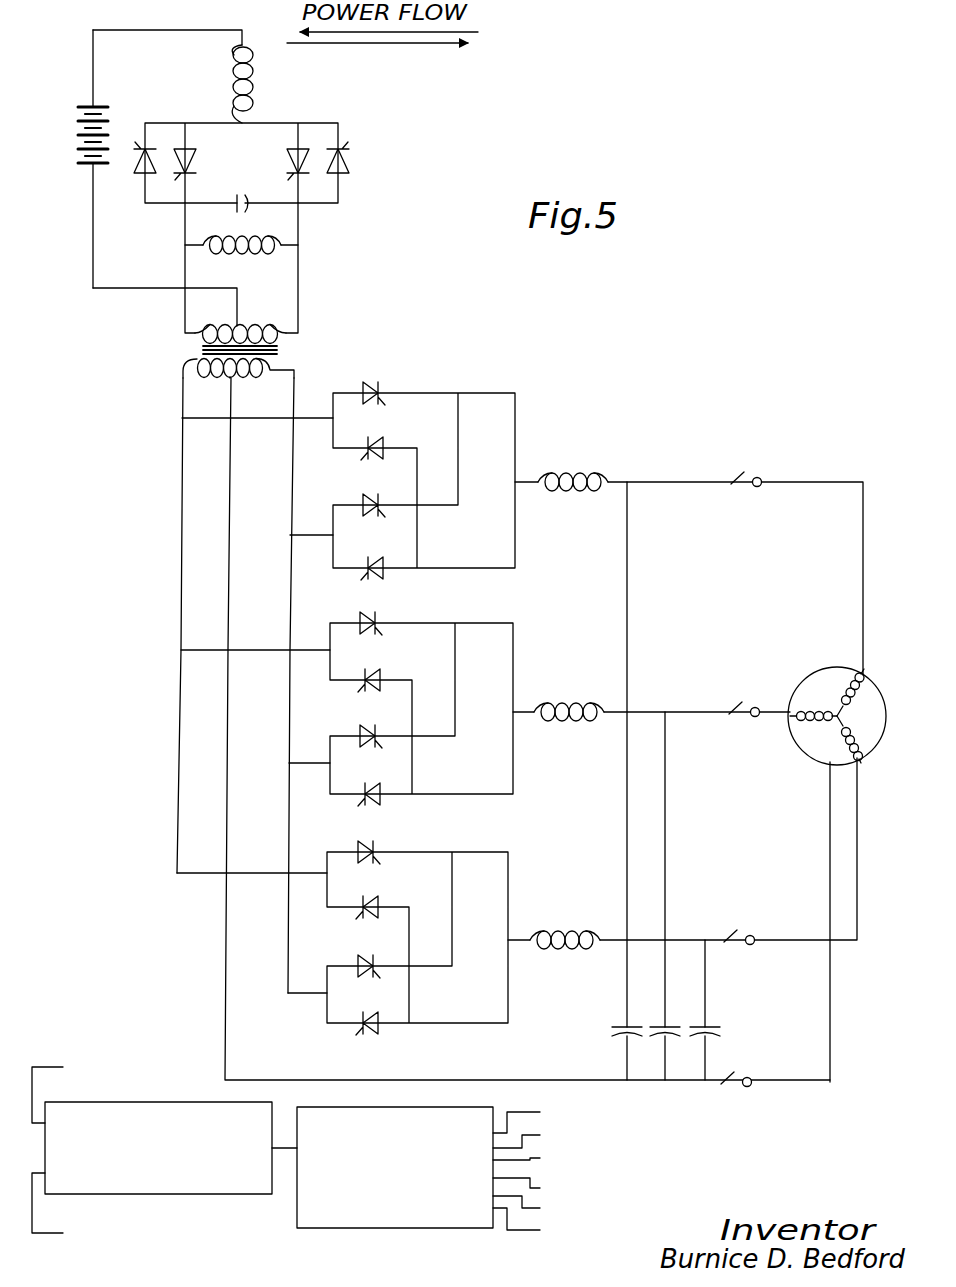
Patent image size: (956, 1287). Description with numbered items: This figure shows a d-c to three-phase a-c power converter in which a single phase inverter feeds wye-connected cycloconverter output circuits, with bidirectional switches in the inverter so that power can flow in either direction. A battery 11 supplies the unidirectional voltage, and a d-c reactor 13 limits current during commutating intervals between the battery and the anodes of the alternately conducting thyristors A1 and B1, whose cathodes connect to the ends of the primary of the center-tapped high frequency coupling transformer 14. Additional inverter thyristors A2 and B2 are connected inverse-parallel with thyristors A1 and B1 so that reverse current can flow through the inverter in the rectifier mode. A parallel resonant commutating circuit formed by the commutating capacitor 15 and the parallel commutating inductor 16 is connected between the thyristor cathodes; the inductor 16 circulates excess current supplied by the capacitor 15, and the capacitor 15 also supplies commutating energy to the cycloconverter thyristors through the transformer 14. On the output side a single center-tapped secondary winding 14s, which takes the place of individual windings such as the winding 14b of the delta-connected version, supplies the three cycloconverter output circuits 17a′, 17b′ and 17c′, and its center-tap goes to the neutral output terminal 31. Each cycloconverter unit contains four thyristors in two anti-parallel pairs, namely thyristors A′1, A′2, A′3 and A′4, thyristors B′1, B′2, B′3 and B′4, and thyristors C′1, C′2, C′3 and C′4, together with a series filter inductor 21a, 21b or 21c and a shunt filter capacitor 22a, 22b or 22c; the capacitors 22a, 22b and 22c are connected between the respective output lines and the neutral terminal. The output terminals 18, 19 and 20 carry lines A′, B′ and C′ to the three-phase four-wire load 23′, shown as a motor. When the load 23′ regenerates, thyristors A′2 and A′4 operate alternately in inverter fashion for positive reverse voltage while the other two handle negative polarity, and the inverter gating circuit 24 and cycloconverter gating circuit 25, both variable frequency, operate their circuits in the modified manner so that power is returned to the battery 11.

The battery 11 is at (80, 148).
The d-c reactor 13 is at (253, 64).
The coupling transformer 14 is at (218, 347).
The secondary coupling transformer winding 14b is at (238, 326).
The center-tapped secondary transformer winding 14s is at (192, 376).
The commutating capacitor 15 is at (236, 202).
The parallel commutating inductor 16 is at (248, 252).
The cycloconverter output circuit 17a′ is at (427, 460).
The cycloconverter output circuit 17b′ is at (452, 699).
The cycloconverter output circuit 17c′ is at (450, 928).
The output terminal 18 is at (770, 480).
The output terminal 19 is at (754, 716).
The output terminal 20 is at (756, 938).
The series filter inductor 21a is at (547, 478).
The filter inductor 21b is at (543, 710).
The filter inductor 21c is at (551, 934).
The shunt filter capacitor 22a is at (628, 1024).
The filter capacitor 22b is at (666, 1026).
The filter capacitor 22c is at (735, 1018).
The load 23′ is at (812, 682).
The inverter gating circuit 24 is at (192, 1194).
The cycloconverter gating circuit 25 is at (382, 1228).
The neutral output terminal 31 is at (752, 1082).
The thyristor A1 is at (201, 156).
The inverter thyristor A2 is at (131, 170).
The thyristor B1 is at (283, 156).
The inverter thyristor B2 is at (358, 152).
The thyristor A′1 is at (387, 380).
The thyristor A′2 is at (392, 440).
The thyristor A′3 is at (357, 492).
The thyristor A′4 is at (387, 555).
The thyristor B′1 is at (387, 615).
The thyristor B′2 is at (388, 670).
The thyristor B′3 is at (353, 726).
The thyristor B′4 is at (382, 784).
The thyristor C′1 is at (352, 843).
The thyristor C′2 is at (385, 899).
The thyristor C′3 is at (351, 956).
The thyristor C′4 is at (381, 1015).